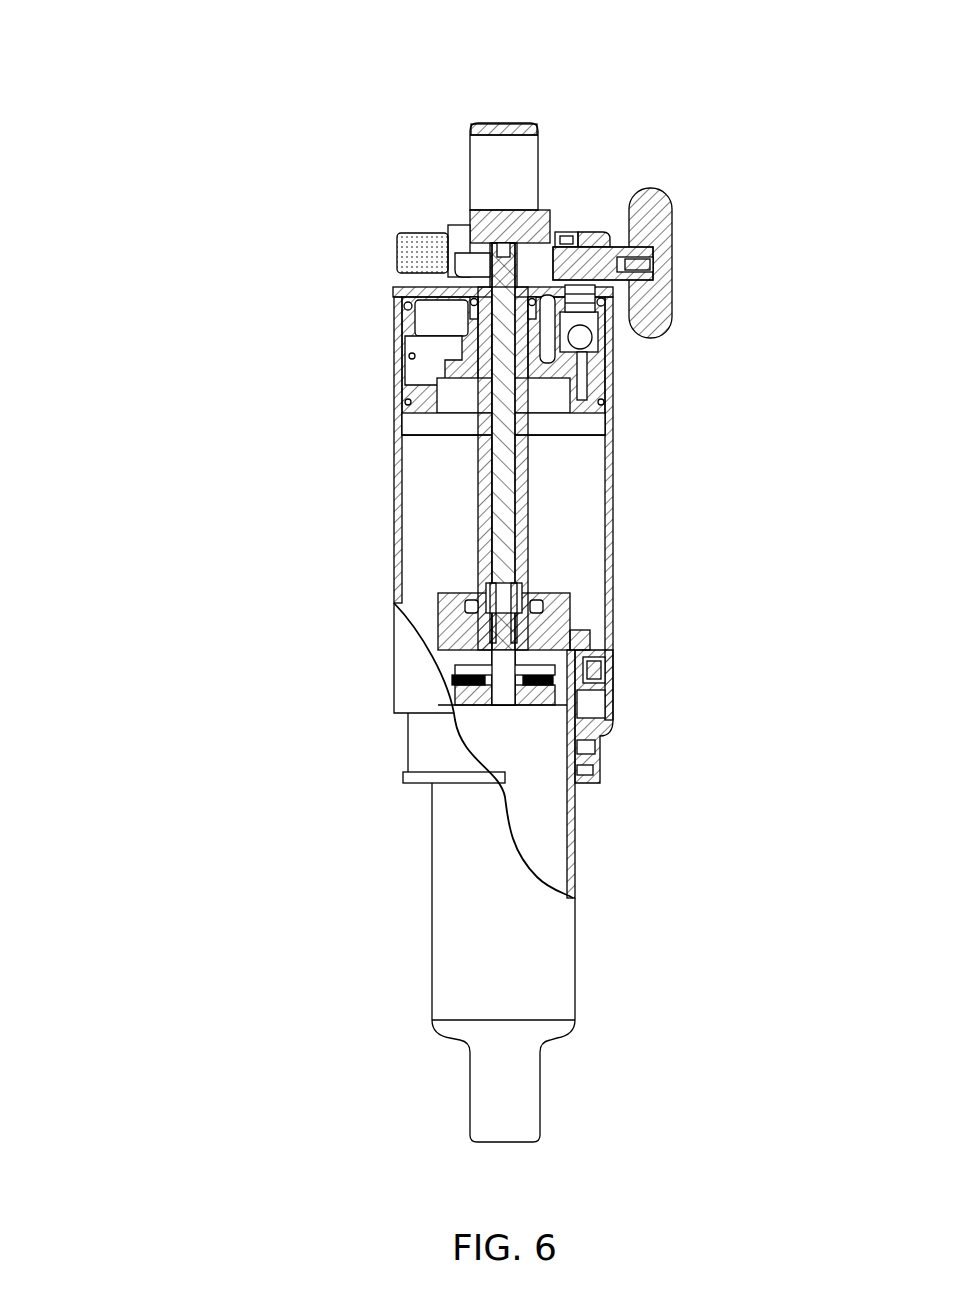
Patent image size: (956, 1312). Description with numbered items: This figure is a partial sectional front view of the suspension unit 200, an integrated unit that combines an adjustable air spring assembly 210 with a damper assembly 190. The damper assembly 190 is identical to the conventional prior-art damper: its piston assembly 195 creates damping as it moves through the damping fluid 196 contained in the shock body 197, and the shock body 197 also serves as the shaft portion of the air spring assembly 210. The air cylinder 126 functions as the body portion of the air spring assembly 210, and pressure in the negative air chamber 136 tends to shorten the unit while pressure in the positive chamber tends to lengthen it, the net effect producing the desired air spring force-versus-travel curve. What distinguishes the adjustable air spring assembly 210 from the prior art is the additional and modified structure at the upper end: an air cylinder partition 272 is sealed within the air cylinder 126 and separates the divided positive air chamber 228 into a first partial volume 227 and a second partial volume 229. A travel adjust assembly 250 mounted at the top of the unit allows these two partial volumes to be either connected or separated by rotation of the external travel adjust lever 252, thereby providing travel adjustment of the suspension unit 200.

The suspension unit 200 is at (602, 108).
The travel adjust assembly 250 is at (588, 202).
The external travel adjust lever 252 is at (647, 226).
The air cylinder partition 272 is at (590, 383).
The first partial volume 227 is at (572, 525).
The air cylinder 126 is at (614, 602).
The negative air chamber 136 is at (587, 713).
The second partial volume 229 is at (422, 348).
The adjustable air spring assembly 210 is at (245, 457).
The divided positive air chamber 228 is at (333, 555).
The piston assembly 195 is at (413, 688).
The damping fluid 196 is at (543, 845).
The shock body 197 is at (510, 973).
The damper assembly 190 is at (375, 913).